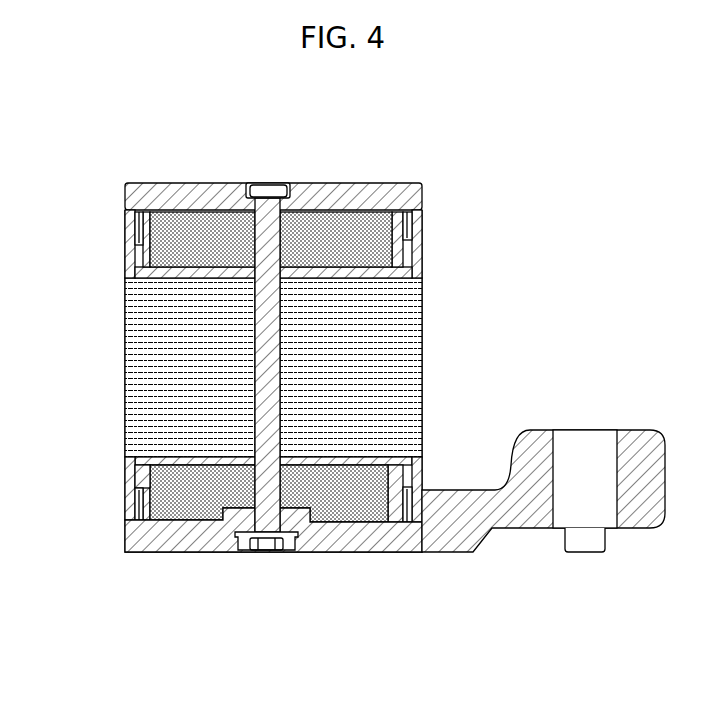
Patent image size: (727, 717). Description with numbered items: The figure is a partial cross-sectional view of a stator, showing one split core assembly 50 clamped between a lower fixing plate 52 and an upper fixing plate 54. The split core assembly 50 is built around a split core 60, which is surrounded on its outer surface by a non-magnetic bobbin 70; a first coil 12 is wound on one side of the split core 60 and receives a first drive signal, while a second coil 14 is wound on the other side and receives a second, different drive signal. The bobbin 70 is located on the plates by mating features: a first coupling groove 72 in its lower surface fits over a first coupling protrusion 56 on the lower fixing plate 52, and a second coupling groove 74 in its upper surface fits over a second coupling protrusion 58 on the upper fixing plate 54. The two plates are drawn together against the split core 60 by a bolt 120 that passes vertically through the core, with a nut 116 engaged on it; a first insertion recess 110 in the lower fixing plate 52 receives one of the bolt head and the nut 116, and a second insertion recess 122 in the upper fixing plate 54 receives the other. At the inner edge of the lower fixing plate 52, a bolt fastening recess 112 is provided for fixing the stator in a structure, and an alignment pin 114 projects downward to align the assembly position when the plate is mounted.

The first coil 12 is at (380, 255).
The second coil 14 is at (273, 367).
The split core assembly 50 is at (436, 324).
The lower fixing plate 52 is at (372, 545).
The upper fixing plate 54 is at (338, 196).
The first coupling protrusion 56 is at (142, 492).
The second coupling protrusion 58 is at (138, 233).
The split core 60 is at (400, 378).
The bobbin 70 is at (138, 468).
The first coupling groove 72 is at (128, 497).
The second coupling groove 74 is at (412, 230).
The first insertion recess 110 is at (240, 542).
The bolt fastening recess 112 is at (587, 460).
The alignment pin 114 is at (585, 545).
The nut 116 is at (283, 545).
The bolt 120 is at (255, 349).
The second insertion recess 122 is at (283, 182).